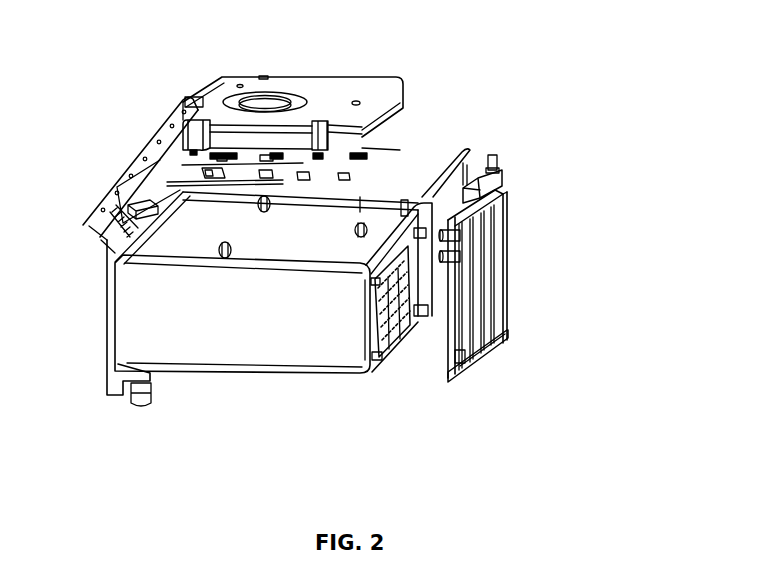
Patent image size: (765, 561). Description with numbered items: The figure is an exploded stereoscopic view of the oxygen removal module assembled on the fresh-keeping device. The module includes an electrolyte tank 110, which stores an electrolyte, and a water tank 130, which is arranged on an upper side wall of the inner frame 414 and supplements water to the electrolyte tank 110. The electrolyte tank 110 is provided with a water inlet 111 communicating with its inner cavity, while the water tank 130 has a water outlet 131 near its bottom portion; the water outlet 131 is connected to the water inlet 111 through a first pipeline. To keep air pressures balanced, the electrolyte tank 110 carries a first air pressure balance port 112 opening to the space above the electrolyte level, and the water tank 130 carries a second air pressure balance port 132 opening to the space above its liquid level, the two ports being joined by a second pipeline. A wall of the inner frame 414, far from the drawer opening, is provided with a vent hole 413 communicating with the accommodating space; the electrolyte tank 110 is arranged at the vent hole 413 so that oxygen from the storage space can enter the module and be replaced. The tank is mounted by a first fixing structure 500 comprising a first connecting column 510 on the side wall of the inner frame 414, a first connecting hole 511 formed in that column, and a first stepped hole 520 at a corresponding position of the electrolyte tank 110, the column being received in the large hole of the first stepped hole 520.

The electrolyte tank 110 is at (500, 298).
The water inlet 111 is at (508, 246).
The first air pressure balance port 112 is at (505, 222).
The water tank 130 is at (340, 77).
The water outlet 131 is at (385, 154).
The second air pressure balance port 132 is at (385, 130).
The vent hole 413 is at (382, 294).
The inner frame 414 is at (225, 345).
The first fixing structure 500 is at (482, 427).
The first connecting column 510 is at (380, 373).
The first connecting hole 511 is at (384, 360).
The first stepped hole 520 is at (472, 372).